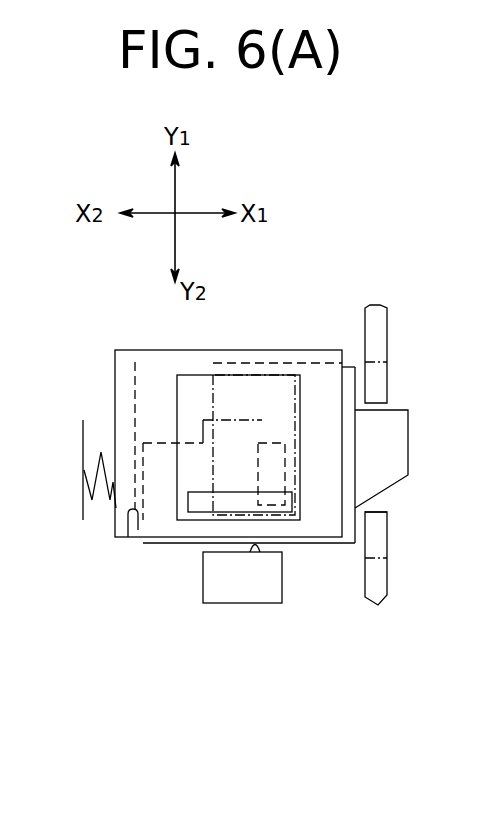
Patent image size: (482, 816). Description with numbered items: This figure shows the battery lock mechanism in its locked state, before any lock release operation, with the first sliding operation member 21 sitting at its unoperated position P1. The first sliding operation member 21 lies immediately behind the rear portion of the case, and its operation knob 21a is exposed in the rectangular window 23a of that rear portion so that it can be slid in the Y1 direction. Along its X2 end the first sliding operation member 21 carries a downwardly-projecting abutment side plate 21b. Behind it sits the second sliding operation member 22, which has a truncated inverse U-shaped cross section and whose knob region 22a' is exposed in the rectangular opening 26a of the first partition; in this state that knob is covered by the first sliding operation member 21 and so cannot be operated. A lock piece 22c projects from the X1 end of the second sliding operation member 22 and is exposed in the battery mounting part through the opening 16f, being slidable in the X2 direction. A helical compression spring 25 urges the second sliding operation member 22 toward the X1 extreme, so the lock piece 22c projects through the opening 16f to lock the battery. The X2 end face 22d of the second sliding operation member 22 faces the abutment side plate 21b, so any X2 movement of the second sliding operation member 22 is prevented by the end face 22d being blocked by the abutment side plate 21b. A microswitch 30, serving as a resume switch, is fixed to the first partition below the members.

The first sliding operation member 21 is at (285, 350).
The operation knob 21a is at (208, 512).
The abutment side plate 21b is at (118, 540).
The second sliding operation member 22 is at (350, 545).
The lever arm portion 22a' is at (340, 346).
The lock piece 22c is at (398, 434).
The X2 end face 22d is at (128, 530).
The rectangular window 23a is at (196, 380).
The helical compression spring 25 is at (92, 505).
The rectangular opening 26a is at (266, 430).
The microswitch 30 is at (260, 597).
The opening 16f is at (386, 508).
The position of the first sliding operation member before the operation P1 is at (318, 540).